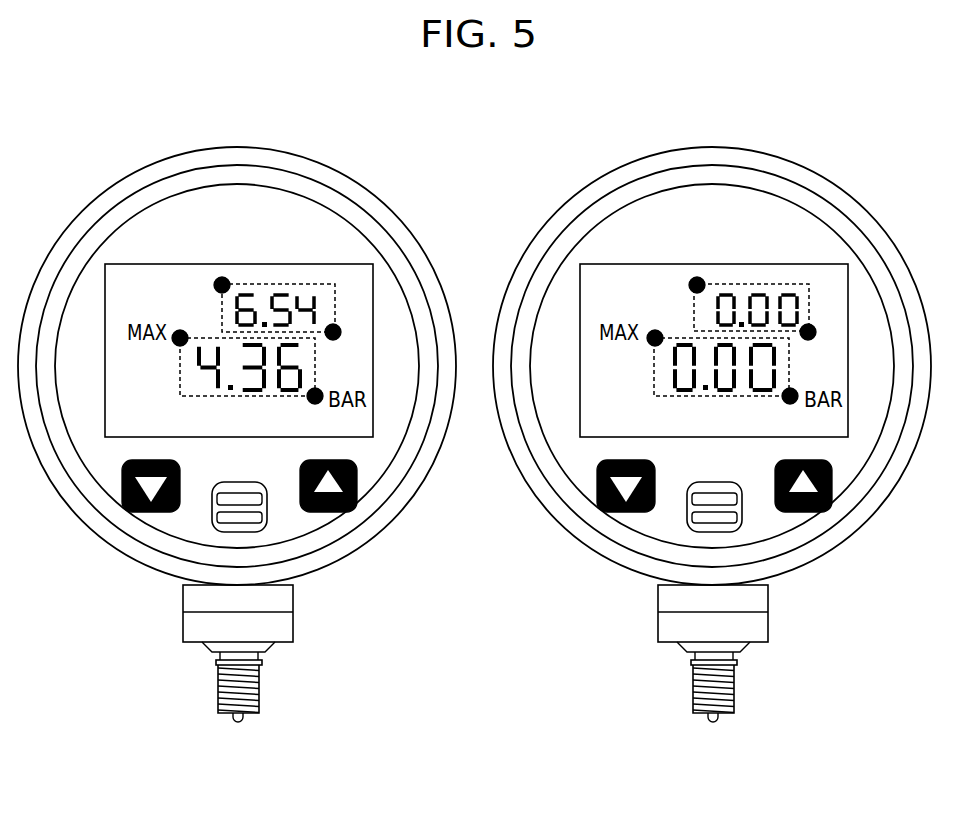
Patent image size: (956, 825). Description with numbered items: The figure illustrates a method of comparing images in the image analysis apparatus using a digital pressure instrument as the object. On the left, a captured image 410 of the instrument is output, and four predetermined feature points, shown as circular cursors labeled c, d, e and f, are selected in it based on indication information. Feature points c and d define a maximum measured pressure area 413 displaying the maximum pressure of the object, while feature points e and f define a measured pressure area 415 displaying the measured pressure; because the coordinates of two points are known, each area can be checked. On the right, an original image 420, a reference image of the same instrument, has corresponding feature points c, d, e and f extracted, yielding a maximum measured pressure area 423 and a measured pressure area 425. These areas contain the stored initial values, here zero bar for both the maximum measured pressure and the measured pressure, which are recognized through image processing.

The captured image 410 is at (298, 157).
The maximum measured pressure area 413 is at (320, 285).
The measured pressure area 415 is at (180, 338).
The original image 420 is at (732, 148).
The maximum measured pressure area 423 is at (789, 285).
The measured pressure area 425 is at (655, 338).